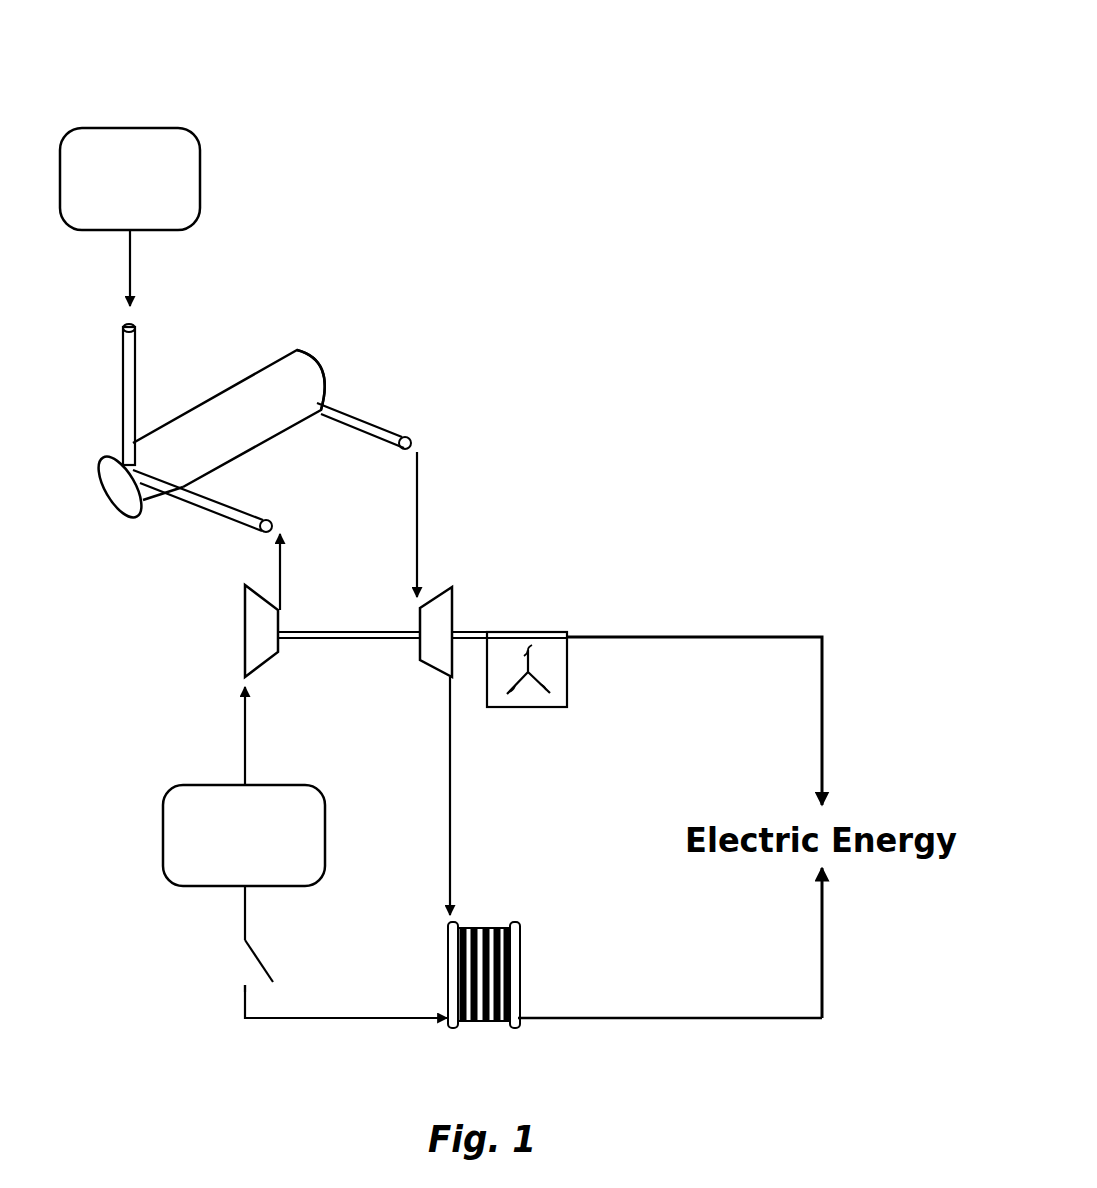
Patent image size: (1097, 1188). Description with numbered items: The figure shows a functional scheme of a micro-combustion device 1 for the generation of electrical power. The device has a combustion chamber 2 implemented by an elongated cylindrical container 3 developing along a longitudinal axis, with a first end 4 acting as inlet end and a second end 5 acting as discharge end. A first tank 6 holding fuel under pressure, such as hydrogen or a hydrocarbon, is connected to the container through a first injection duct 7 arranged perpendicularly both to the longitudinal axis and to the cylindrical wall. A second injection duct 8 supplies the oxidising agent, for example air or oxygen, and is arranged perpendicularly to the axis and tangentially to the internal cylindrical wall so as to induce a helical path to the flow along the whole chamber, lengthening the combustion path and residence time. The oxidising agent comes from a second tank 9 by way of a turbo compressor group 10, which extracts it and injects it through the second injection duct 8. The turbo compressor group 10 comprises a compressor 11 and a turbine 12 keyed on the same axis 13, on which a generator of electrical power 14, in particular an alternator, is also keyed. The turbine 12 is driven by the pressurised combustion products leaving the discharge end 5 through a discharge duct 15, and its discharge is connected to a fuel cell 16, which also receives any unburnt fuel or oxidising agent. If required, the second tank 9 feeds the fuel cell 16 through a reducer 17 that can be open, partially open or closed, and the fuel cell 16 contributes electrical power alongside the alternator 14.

The micro-combustion device 1 is at (527, 124).
The combustion chamber 2 is at (369, 352).
The elongated cylindrical container 3 is at (210, 417).
The first end 4 is at (120, 493).
The second end 5 is at (330, 382).
The first tank 6 is at (165, 147).
The first injection duct 7 is at (133, 350).
The second injection duct 8 is at (210, 508).
The second tank 9 is at (230, 800).
The turbo compressor group 10 is at (373, 697).
The compressor 11 is at (258, 625).
The turbine 12 is at (433, 623).
The axis 13 is at (303, 627).
The generator of electrical power 14 is at (552, 660).
The discharge duct 15 is at (369, 427).
The fuel cell 16 is at (515, 970).
The reducer 17 is at (257, 957).